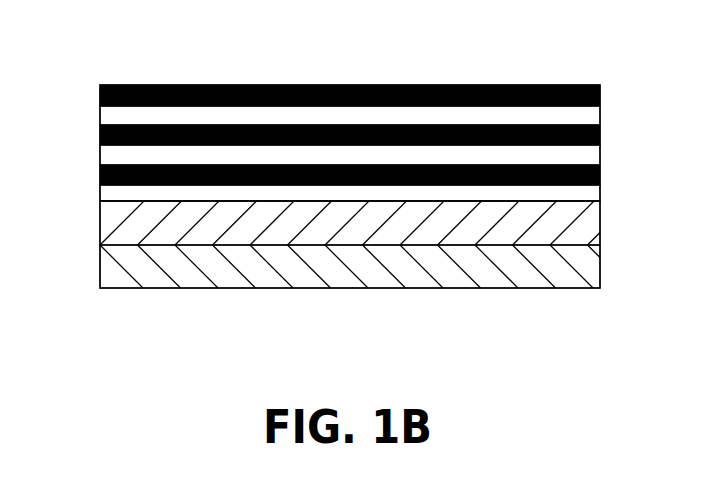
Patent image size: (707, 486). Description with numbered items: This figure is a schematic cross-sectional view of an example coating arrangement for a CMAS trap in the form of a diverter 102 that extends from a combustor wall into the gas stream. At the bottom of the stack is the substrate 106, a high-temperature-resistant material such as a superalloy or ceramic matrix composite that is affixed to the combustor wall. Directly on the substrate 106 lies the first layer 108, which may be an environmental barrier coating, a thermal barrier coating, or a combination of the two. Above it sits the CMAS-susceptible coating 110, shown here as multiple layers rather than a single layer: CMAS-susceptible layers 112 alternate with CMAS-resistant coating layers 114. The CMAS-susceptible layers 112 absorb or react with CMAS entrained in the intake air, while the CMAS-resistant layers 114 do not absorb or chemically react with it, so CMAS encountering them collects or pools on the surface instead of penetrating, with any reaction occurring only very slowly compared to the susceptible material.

The diverter 102 is at (278, 330).
The substrate 106 is at (136, 263).
The first layer 108 is at (137, 221).
The CMAS-susceptible coating 110 is at (353, 139).
The CMAS-susceptible layers 112 is at (578, 85).
The CMAS-resistant coating layers 114 is at (592, 112).